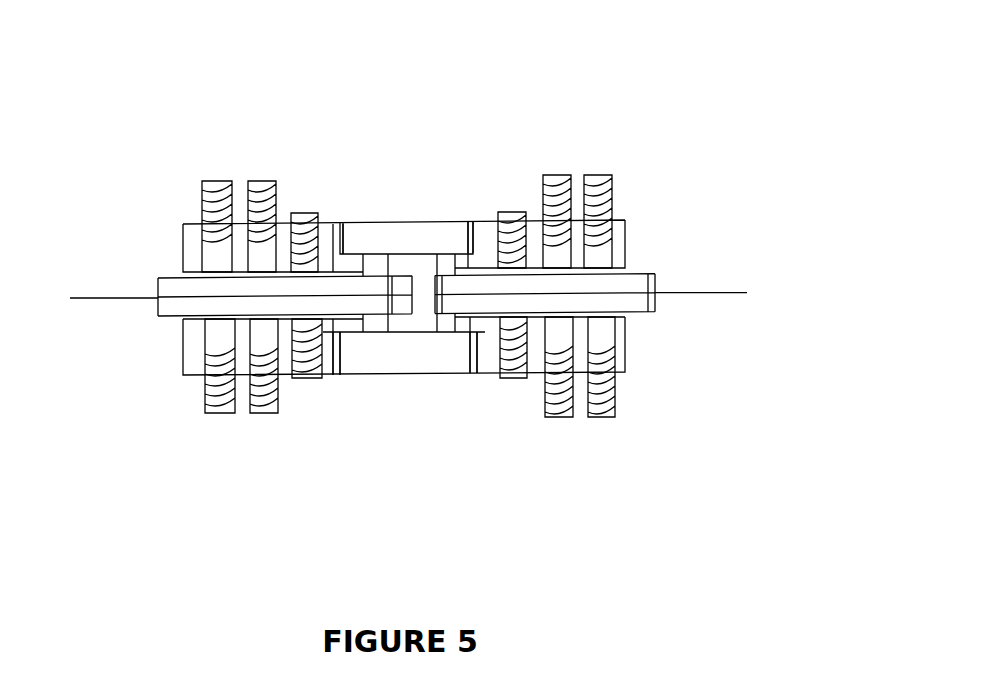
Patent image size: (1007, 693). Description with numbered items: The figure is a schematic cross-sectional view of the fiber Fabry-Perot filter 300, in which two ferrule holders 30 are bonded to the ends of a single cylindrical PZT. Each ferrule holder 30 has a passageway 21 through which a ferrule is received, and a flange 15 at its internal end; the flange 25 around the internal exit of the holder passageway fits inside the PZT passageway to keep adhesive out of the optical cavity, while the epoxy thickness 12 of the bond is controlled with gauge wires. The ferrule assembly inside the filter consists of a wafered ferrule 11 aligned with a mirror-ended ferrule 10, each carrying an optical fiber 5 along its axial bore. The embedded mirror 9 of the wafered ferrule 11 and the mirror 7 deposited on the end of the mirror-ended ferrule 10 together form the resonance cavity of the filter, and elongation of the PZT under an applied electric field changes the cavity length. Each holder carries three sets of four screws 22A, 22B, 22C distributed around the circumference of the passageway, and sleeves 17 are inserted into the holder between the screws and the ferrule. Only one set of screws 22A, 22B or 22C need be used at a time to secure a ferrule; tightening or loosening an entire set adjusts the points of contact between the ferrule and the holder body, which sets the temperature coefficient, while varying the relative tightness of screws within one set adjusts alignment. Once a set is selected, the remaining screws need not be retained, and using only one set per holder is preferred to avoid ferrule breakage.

The optical fiber 5 is at (747, 290).
The mirror 7 is at (437, 254).
The embedded mirror 9 is at (388, 254).
The mirror-ended ferrule 10 is at (655, 285).
The wafered ferrule 11 is at (157, 287).
The epoxy thickness 12 is at (340, 220).
The flange 15 is at (412, 376).
The sleeve 17 is at (182, 320).
The passageway 21 is at (628, 263).
The first set of screws 22A is at (303, 210).
The second set of screws 22B is at (262, 178).
The third set of screws 22C is at (217, 178).
The flange 25 is at (345, 325).
The ferrule holder 30 is at (644, 226).
The fiber Fabry-Perot filter 300 is at (678, 63).